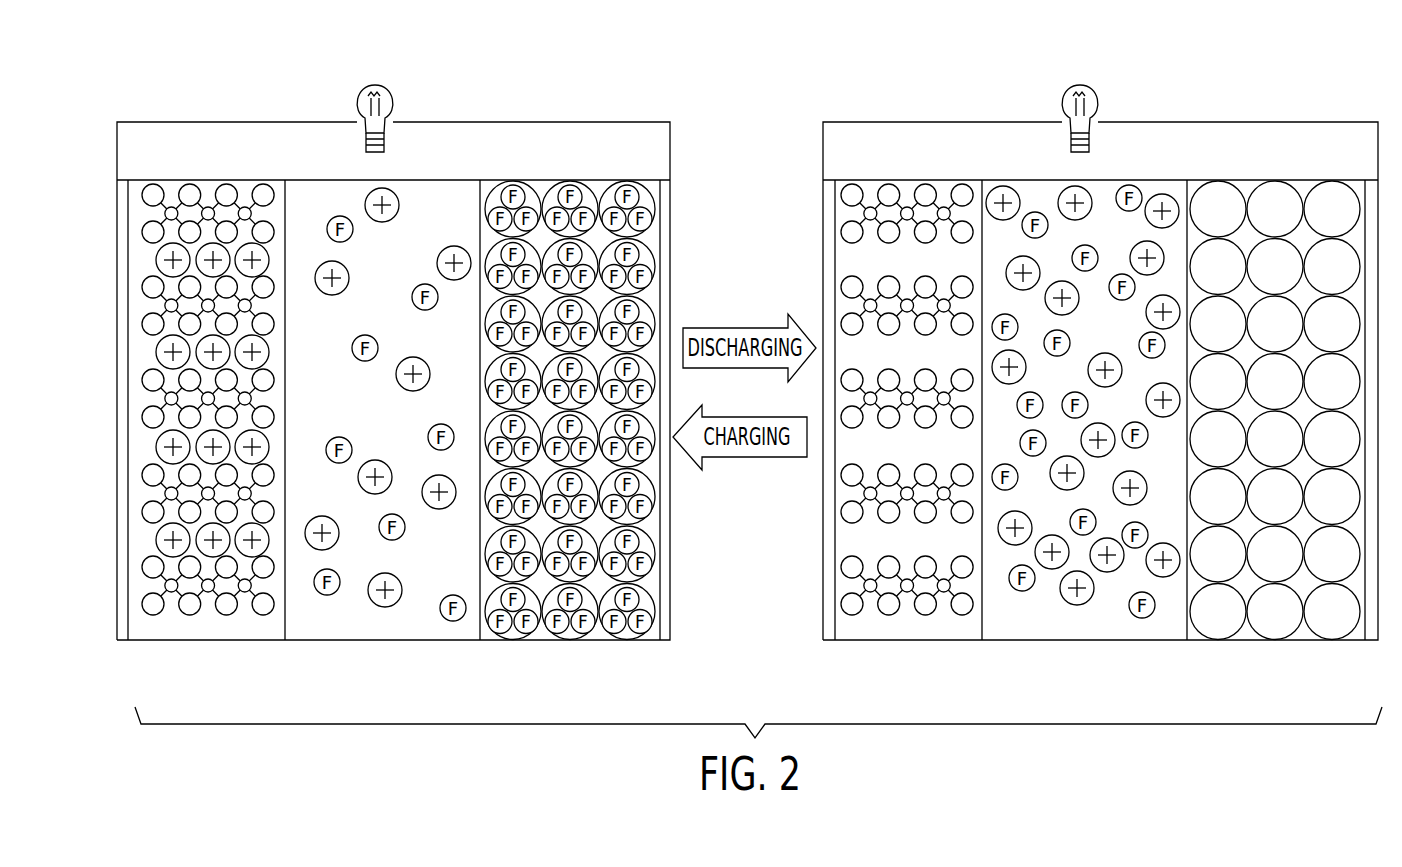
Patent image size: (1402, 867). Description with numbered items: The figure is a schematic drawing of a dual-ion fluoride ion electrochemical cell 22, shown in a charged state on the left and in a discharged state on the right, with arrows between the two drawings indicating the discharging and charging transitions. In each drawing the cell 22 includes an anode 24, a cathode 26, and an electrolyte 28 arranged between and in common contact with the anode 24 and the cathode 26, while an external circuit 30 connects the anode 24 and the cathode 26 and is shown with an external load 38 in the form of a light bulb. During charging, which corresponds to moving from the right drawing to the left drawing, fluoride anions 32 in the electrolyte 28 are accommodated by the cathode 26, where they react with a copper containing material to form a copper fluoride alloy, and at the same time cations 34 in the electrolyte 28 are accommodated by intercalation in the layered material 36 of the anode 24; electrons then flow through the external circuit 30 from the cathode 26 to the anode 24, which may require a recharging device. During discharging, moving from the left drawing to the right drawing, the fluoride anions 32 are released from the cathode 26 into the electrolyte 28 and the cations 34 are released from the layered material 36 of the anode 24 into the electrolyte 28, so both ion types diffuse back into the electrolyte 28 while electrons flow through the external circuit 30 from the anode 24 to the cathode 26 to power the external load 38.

The dual-ion electrochemical cell 22 is at (160, 62).
The anode 24 is at (258, 180).
The cathode 26 is at (492, 180).
The electrolyte 28 is at (445, 218).
The external circuit 30 is at (230, 122).
The fluoride anions 32 is at (327, 225).
The cations 34 is at (156, 348).
The layered material 36 is at (148, 496).
The external load 38 is at (359, 90).